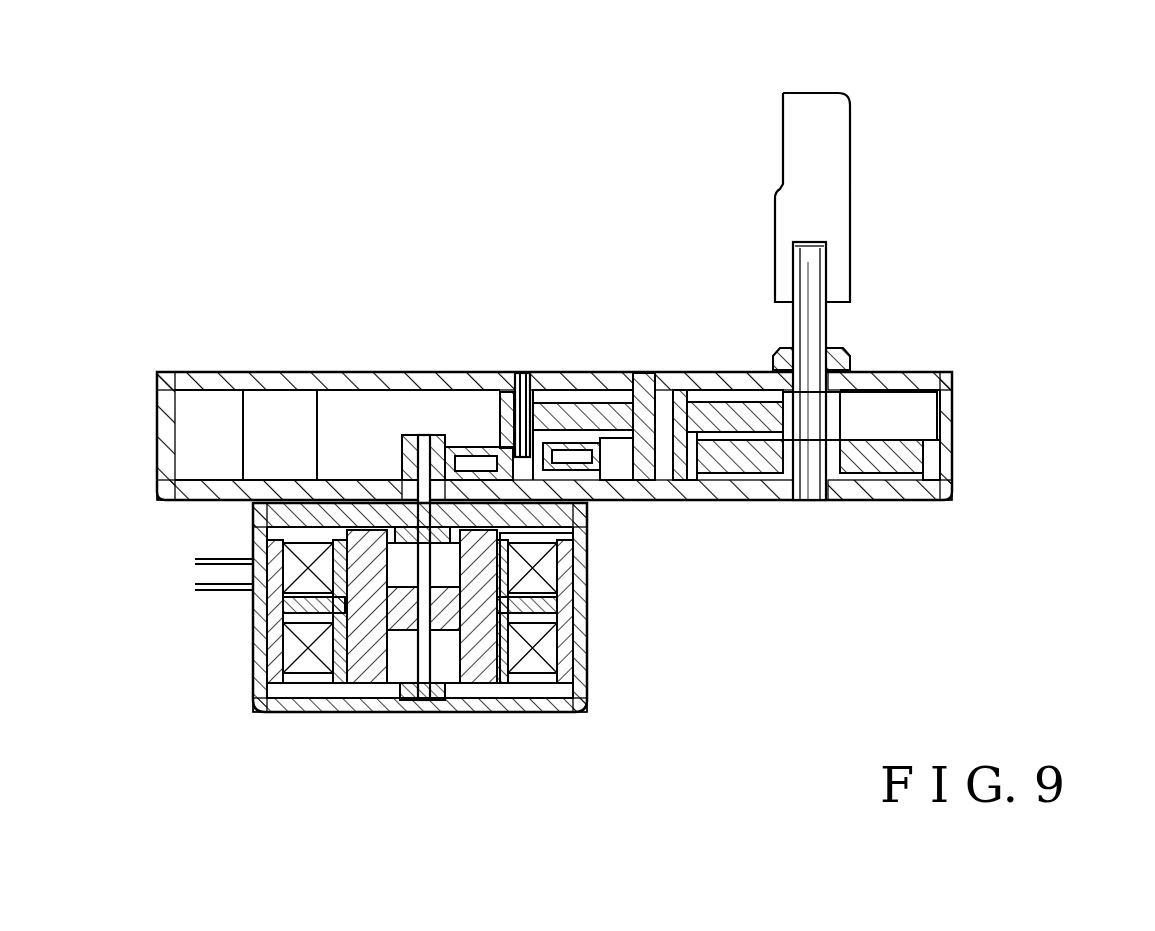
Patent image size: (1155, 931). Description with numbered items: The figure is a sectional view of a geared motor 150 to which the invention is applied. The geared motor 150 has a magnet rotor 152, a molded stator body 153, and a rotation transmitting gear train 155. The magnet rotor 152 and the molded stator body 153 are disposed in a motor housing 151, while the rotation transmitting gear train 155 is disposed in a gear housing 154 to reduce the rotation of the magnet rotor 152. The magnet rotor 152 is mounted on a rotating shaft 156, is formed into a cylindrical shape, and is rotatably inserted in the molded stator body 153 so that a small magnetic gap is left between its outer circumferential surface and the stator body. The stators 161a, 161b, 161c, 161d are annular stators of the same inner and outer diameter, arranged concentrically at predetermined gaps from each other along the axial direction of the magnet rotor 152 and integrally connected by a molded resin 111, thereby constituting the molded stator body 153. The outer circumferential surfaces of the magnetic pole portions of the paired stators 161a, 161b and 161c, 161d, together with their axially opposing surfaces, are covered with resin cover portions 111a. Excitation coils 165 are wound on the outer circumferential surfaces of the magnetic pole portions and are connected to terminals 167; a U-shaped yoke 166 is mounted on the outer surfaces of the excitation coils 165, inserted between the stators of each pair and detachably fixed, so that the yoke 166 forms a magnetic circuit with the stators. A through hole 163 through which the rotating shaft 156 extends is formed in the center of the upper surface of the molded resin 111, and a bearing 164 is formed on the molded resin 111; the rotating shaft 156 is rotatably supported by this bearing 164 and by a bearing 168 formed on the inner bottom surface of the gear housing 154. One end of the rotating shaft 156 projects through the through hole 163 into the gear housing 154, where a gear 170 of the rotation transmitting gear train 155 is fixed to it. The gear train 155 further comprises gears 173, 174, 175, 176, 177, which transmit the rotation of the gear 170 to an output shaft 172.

The geared motor 150 is at (517, 238).
The gear housing 154 is at (952, 428).
The gear 170 is at (403, 433).
The through hole 163 is at (447, 447).
The gear 174 is at (518, 395).
The gear 173 is at (585, 405).
The gear 175 is at (642, 440).
The gear 176 is at (692, 415).
The gear 177 is at (750, 445).
The output shaft 172 is at (822, 325).
The rotation transmitting gear train 155 is at (893, 412).
The motor housing 151 is at (278, 712).
The molded resin 111 is at (585, 510).
The resin cover portion 111a is at (533, 690).
The stator 161a is at (590, 535).
The stator 161b is at (583, 605).
The stator 161c is at (585, 615).
The stator 161d is at (590, 695).
The excitation coil 165 is at (265, 640).
The yoke 166 is at (585, 660).
The rotating shaft 156 is at (388, 700).
The magnet rotor 152 is at (470, 695).
The bearing 168 is at (440, 690).
The bearing 164 is at (395, 530).
The terminal 167 is at (195, 586).
The molded stator body 153 is at (268, 655).